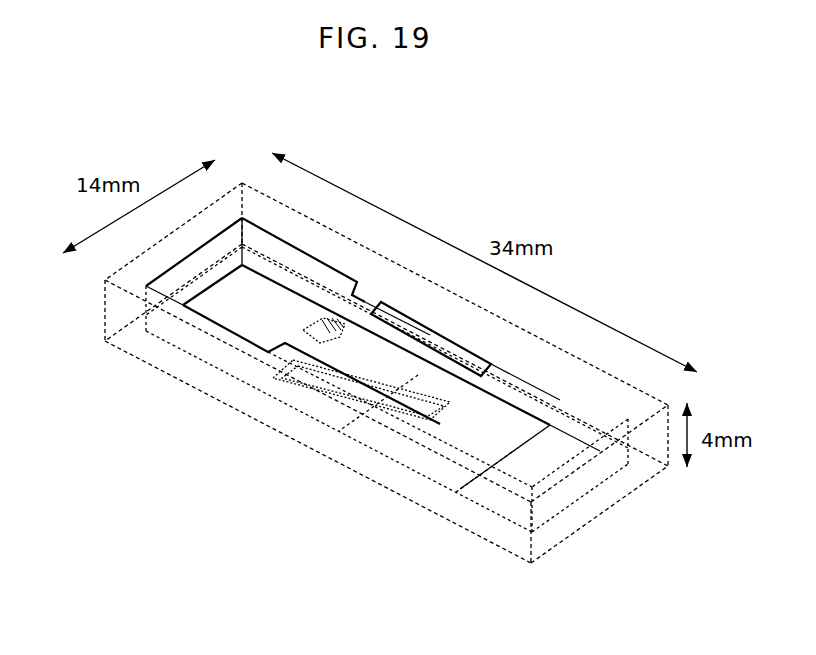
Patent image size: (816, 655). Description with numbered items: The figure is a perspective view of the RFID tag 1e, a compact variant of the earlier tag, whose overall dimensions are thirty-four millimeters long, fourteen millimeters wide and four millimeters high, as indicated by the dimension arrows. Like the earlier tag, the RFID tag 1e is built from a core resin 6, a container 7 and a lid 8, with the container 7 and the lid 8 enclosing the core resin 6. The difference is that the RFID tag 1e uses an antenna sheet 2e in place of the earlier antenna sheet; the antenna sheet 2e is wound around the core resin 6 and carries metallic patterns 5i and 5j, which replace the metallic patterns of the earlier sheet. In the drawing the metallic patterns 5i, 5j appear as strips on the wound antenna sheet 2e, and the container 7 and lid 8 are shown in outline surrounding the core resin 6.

The RFID tag 1e is at (682, 198).
The antenna sheet 2e is at (587, 493).
The metallic pattern 5i is at (357, 277).
The metallic pattern 5j is at (397, 297).
The core resin 6 is at (185, 337).
The container 7 is at (543, 557).
The lid 8 is at (637, 388).